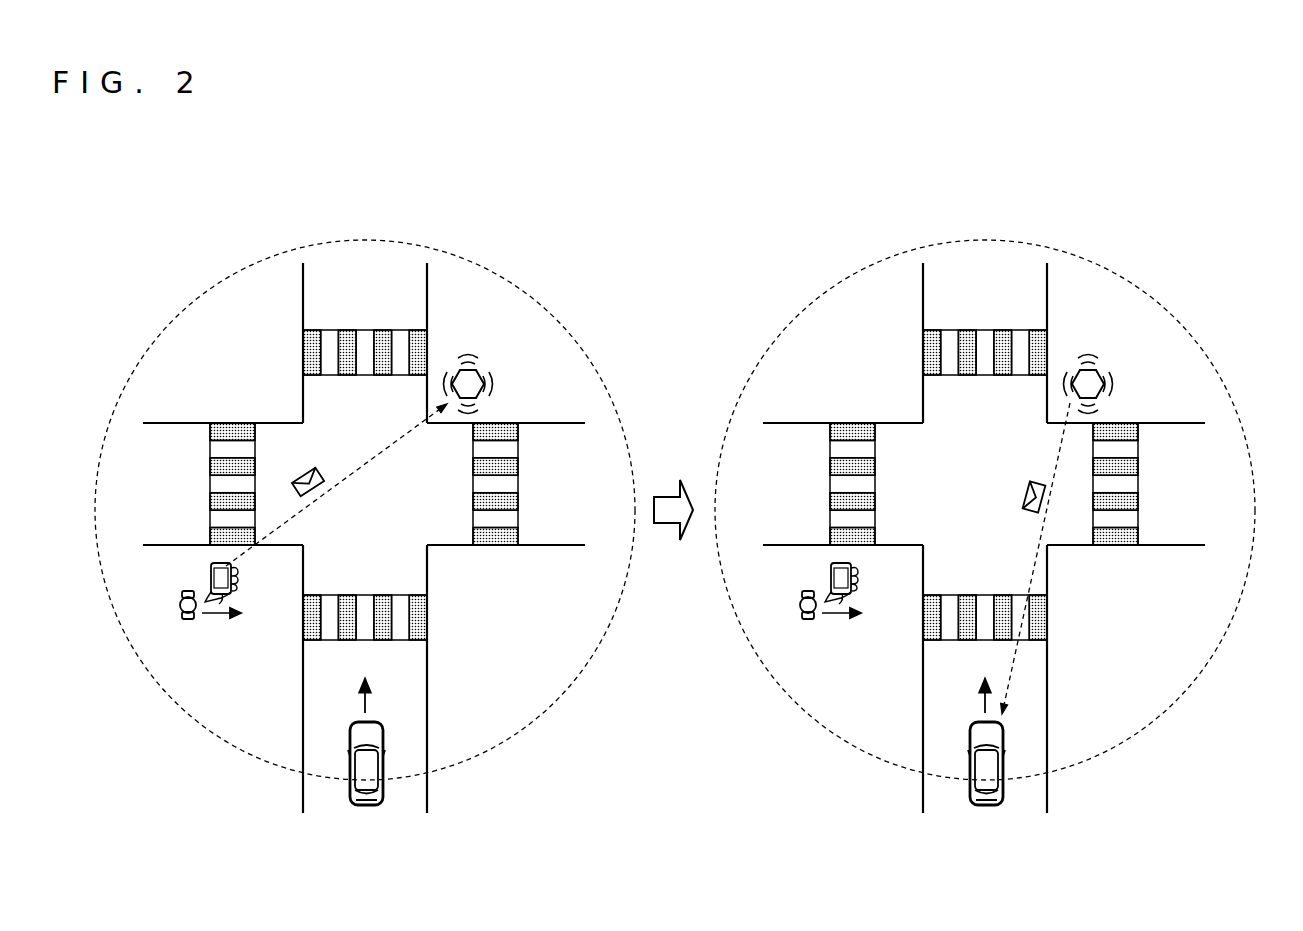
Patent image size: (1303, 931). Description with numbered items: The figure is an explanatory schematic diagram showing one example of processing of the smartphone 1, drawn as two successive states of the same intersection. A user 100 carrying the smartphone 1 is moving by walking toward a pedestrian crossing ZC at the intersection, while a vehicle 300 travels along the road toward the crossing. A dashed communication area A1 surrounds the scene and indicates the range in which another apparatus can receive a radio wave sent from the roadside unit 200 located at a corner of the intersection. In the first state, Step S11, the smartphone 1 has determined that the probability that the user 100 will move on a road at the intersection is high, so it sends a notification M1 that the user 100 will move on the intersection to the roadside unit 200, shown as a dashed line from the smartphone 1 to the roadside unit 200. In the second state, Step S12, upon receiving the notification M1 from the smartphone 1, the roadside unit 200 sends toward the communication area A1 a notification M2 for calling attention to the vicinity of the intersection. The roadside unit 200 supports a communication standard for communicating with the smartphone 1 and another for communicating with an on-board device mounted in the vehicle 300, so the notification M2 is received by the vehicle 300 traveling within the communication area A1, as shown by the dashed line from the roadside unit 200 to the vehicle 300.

The smartphone 1 is at (209, 566).
The user 100 is at (188, 621).
The roadside unit 200 is at (478, 372).
The vehicle 300 is at (365, 806).
The notification M1 is at (321, 470).
The notification M2 is at (1029, 482).
The communication area A1 is at (549, 312).
The pedestrian crossing ZC is at (418, 620).
The step S11 is at (618, 311).
The step S12 is at (1238, 311).